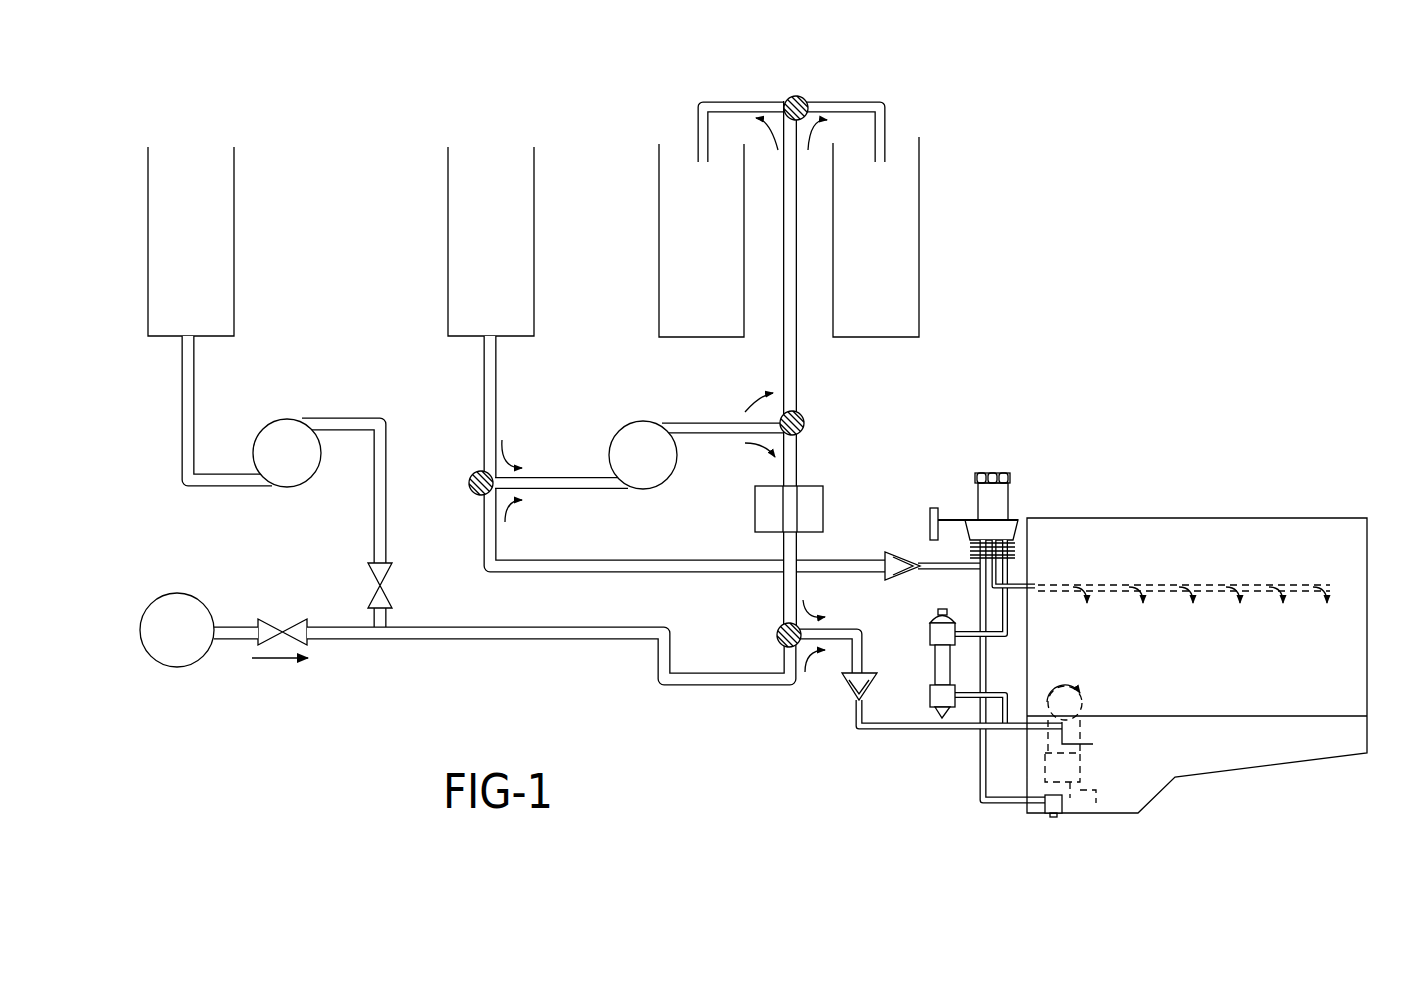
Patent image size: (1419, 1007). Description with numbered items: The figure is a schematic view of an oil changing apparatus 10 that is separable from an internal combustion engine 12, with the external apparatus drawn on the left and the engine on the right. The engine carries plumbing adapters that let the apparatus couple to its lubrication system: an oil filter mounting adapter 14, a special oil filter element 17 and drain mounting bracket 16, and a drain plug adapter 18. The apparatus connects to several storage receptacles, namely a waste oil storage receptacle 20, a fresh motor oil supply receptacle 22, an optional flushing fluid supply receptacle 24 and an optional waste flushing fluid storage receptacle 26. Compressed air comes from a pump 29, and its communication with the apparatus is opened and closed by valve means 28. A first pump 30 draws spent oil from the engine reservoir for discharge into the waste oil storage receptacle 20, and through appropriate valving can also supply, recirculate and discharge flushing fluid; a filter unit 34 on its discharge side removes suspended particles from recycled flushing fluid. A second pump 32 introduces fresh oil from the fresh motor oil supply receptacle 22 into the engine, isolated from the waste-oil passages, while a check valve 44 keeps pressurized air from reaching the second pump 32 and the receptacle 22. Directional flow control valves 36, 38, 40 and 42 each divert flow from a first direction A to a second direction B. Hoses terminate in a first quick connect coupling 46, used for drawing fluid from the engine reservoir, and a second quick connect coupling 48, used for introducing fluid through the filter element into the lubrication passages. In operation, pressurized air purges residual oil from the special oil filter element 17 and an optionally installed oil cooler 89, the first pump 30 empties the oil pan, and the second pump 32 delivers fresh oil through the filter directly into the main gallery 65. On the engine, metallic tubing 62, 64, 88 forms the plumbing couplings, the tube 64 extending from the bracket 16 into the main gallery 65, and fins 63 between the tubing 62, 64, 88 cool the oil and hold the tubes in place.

The oil changing apparatus 10 is at (987, 367).
The internal combustion engine 12 is at (1188, 497).
The oil filter mounting adapter 14 is at (1112, 732).
The drain mounting bracket 16 is at (1017, 500).
The special oil filter element 17 is at (992, 472).
The drain plug adapter 18 is at (1052, 820).
The waste oil storage receptacle 20 is at (659, 221).
The fresh motor oil supply receptacle 22 is at (232, 237).
The flushing fluid supply receptacle 24 is at (447, 207).
The waste flushing fluid storage receptacle 26 is at (921, 218).
The valve means 28 is at (278, 615).
The pump 29 is at (165, 665).
The first pump 30 is at (616, 427).
The second pump 32 is at (264, 428).
The filter unit 34 is at (823, 503).
The directional flow control valve 36 is at (770, 634).
The directional flow control valve 38 is at (469, 481).
The directional flow control valve 40 is at (810, 420).
The directional flow control valve 42 is at (812, 95).
The check valve 44 is at (390, 588).
The first quick connect coupling 46 is at (885, 553).
The second quick connect coupling 48 is at (852, 699).
The tubing 62 is at (1010, 612).
The fins 63 is at (1012, 546).
The second hose or metallic tube 64 is at (998, 580).
The main gallery 65 is at (1100, 588).
The tubing 88 is at (982, 745).
The oil cooler 89 is at (930, 667).